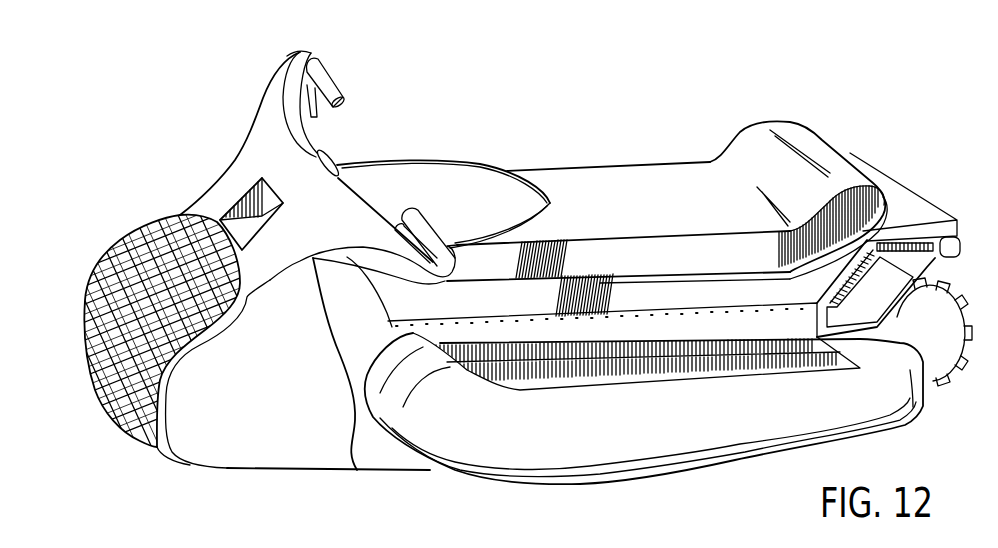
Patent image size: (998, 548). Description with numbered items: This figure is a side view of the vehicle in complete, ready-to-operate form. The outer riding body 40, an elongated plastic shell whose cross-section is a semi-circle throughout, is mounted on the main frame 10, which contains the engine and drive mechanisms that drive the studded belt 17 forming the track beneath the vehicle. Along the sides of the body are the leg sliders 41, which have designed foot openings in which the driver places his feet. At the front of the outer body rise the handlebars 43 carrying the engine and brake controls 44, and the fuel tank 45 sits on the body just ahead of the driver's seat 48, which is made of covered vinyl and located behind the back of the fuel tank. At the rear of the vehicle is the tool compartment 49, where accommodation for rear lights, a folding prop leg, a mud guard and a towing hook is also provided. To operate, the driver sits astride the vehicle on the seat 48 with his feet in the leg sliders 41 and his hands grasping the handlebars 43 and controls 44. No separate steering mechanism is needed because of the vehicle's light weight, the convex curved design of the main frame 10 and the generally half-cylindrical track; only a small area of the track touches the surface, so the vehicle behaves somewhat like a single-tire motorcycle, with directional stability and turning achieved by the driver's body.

The main frame 10 is at (550, 298).
The studded belt 17 is at (135, 437).
The outer body 40 is at (215, 187).
The leg sliders 41 is at (731, 430).
The handlebars 43 is at (327, 82).
The driving and brake controls 44 is at (313, 117).
The fuel tank 45 is at (440, 164).
The driver's seat 48 is at (668, 172).
The tool compartment 49 is at (850, 152).